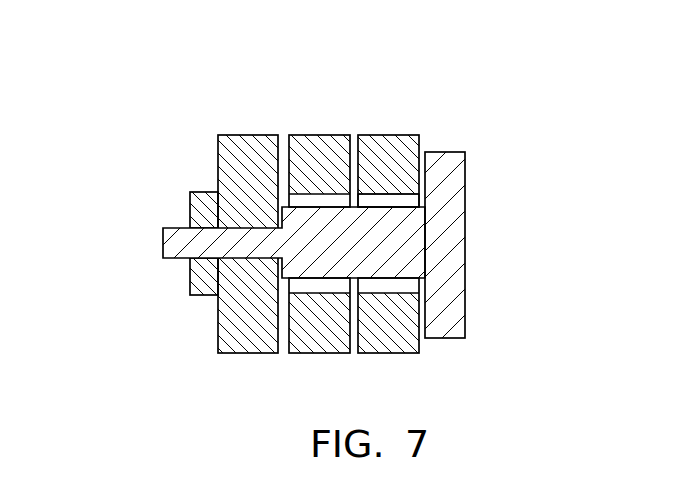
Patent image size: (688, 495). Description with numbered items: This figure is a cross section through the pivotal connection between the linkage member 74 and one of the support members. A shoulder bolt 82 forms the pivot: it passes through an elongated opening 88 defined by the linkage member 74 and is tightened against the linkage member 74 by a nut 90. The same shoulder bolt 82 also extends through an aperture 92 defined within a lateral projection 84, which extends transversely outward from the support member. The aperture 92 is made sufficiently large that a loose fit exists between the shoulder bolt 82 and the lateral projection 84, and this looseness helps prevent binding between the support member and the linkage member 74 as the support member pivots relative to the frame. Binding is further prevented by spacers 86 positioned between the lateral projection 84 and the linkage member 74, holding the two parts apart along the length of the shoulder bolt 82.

The linkage member 74 is at (222, 353).
The shoulder bolt 82 is at (465, 229).
The lateral projection 84 is at (397, 133).
The spacer 86 is at (317, 134).
The elongated opening 88 is at (218, 192).
The nut 90 is at (190, 283).
The aperture 92 is at (388, 193).